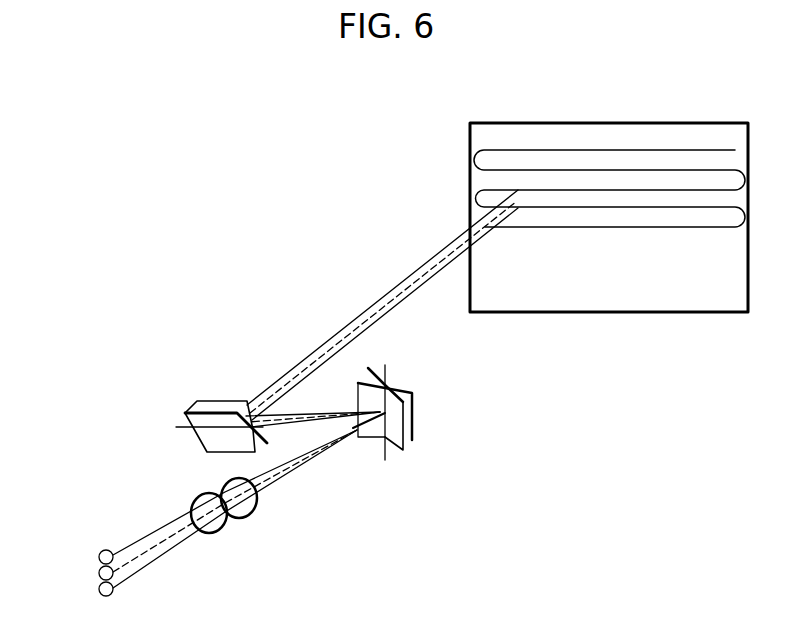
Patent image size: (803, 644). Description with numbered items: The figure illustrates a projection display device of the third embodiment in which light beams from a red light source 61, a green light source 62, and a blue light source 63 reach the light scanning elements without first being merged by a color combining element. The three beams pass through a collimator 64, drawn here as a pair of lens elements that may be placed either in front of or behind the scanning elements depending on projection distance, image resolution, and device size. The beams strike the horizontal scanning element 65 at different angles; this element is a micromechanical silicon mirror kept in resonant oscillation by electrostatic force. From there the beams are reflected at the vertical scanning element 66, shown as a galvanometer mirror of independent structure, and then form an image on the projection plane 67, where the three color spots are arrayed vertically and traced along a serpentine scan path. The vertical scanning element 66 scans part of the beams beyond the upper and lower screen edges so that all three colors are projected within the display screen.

The red light source 61 is at (98, 556).
The green light source 62 is at (98, 573).
The blue light source 63 is at (98, 590).
The collimator 64 is at (257, 517).
The horizontal scanning element 65 is at (416, 428).
The vertical scanning element 66 is at (187, 413).
The projection plane 67 is at (655, 312).